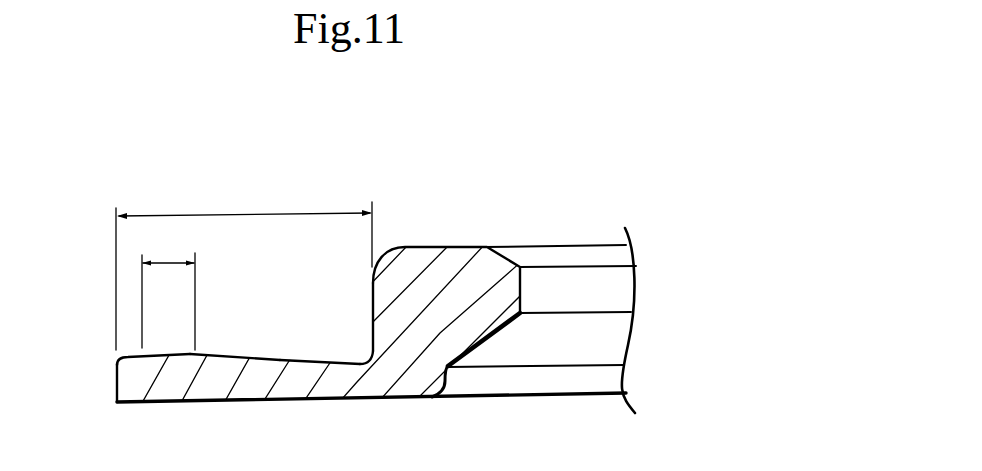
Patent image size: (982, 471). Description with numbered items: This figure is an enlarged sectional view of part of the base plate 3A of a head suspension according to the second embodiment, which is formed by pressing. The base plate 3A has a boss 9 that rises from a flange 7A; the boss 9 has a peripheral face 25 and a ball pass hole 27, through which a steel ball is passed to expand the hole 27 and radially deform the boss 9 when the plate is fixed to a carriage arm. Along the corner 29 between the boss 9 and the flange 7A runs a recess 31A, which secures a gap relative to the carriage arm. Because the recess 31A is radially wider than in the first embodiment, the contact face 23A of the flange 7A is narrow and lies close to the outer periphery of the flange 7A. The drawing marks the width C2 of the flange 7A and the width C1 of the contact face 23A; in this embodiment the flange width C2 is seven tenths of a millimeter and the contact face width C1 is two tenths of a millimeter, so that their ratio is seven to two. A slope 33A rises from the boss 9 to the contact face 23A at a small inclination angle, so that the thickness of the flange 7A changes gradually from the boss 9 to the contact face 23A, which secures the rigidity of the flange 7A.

The base plate 3A is at (453, 247).
The flange 7A is at (120, 389).
The boss 9 is at (418, 257).
The contact face 23A is at (173, 354).
The peripheral face 25 is at (373, 292).
The ball pass hole 27 is at (528, 284).
The corner 29 is at (364, 364).
The recess 31A is at (312, 362).
The slope 33A is at (249, 362).
The width of the contact face C1 is at (168, 296).
The width of the flange C2 is at (244, 271).